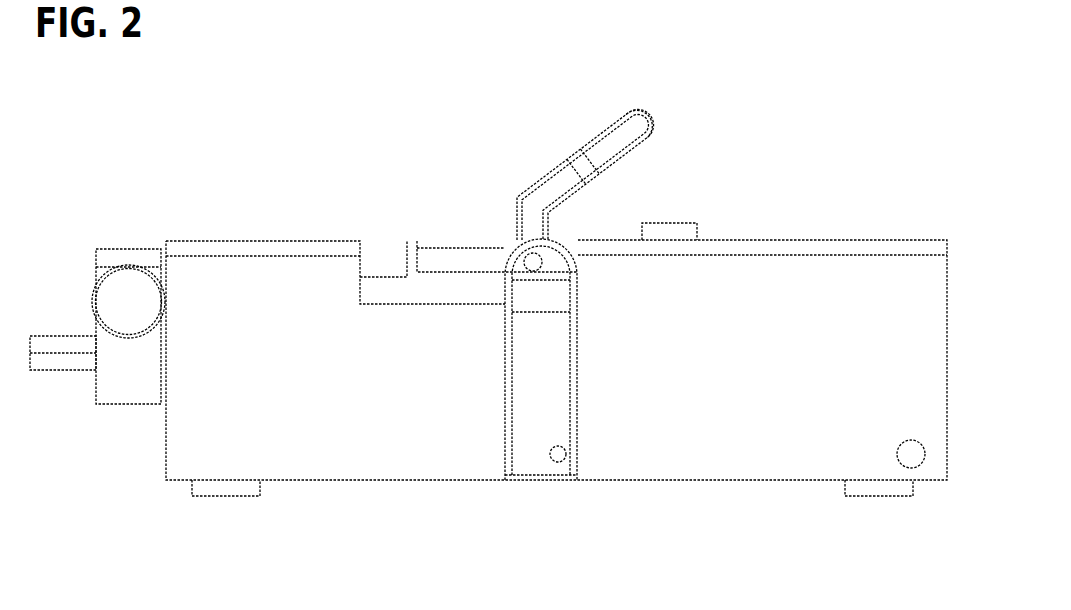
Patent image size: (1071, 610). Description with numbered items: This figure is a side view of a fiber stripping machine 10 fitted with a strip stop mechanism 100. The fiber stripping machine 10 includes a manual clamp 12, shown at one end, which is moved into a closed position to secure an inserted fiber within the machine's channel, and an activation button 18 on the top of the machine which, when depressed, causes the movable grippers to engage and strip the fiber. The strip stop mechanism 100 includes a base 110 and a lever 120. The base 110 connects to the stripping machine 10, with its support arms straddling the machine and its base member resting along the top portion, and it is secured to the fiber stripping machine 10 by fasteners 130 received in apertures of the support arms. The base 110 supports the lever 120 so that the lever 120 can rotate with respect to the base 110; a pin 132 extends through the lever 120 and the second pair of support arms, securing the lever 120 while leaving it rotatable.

The fiber stripping machine 10 is at (184, 436).
The manual clamp 12 is at (139, 390).
The activation button 18 is at (682, 230).
The strip stop mechanism 100 is at (605, 150).
The base 110 is at (527, 462).
The lever 120 is at (632, 122).
The fasteners 130 is at (561, 458).
The pin 132 is at (530, 259).